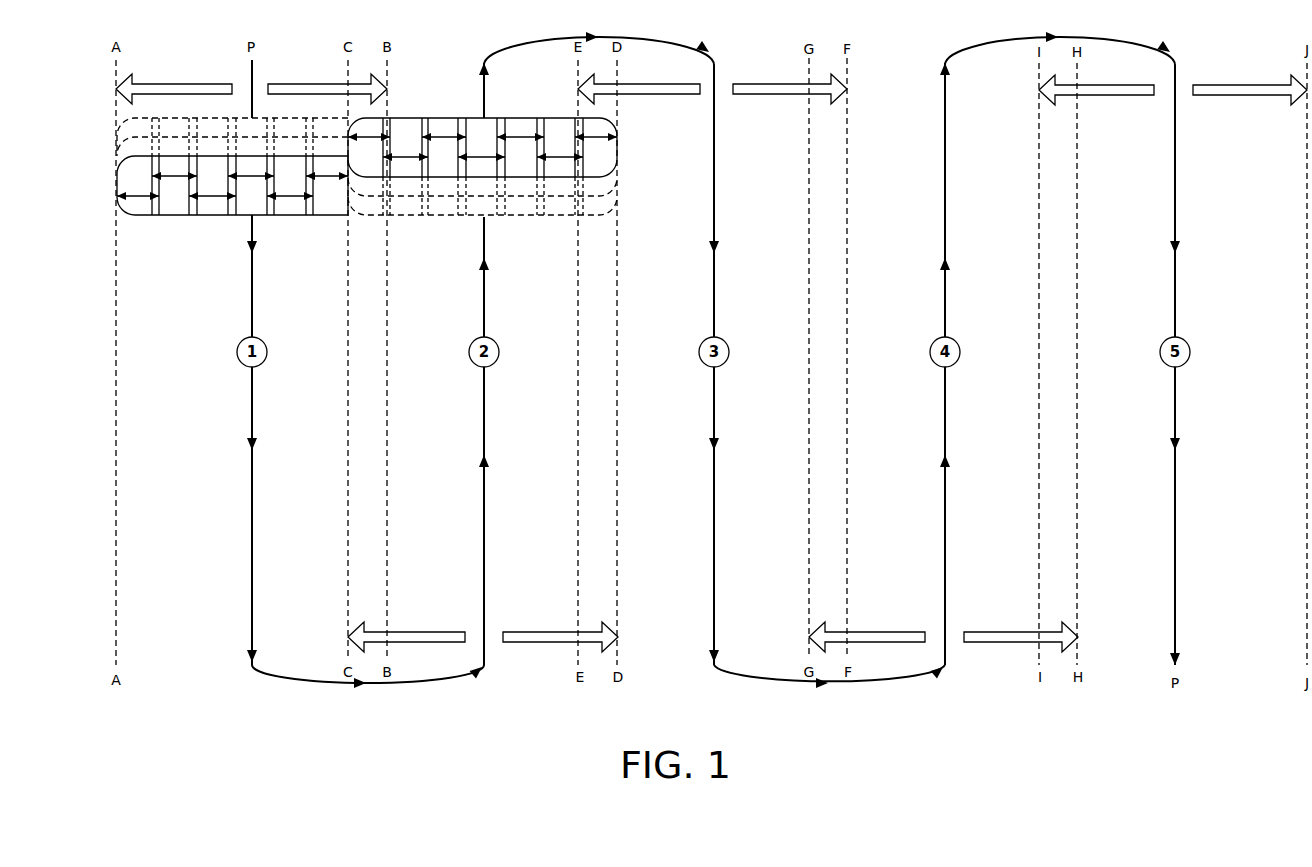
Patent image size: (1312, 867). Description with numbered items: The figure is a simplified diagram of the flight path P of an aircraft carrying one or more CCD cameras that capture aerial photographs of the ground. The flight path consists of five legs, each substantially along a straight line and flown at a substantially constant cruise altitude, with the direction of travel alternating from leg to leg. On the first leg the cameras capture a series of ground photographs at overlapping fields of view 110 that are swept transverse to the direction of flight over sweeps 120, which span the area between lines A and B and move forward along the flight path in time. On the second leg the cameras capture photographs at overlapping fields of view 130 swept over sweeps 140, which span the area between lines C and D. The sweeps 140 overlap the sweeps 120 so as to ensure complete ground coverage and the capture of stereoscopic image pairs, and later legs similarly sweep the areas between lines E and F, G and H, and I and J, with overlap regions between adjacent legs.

The overlapping fields of view 110 is at (213, 205).
The sweeps 120 is at (115, 146).
The overlapping fields of view 130 is at (598, 203).
The sweeps 140 is at (618, 150).